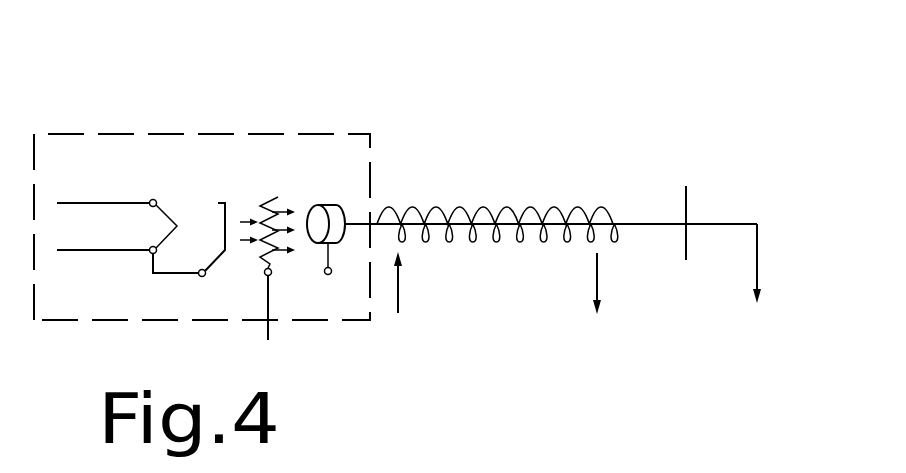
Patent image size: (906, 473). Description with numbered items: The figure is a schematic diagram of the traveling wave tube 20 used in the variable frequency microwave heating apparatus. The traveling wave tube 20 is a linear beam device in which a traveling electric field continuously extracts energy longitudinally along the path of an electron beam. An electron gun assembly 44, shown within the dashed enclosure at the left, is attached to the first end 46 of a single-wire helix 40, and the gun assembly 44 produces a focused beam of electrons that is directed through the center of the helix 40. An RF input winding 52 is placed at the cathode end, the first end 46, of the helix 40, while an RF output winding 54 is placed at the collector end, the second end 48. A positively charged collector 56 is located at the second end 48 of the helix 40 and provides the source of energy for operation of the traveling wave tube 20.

The traveling wave tube 20 is at (126, 66).
The electron gun assembly 44 is at (262, 130).
The single-wire helix 40 is at (472, 205).
The first end 46 is at (393, 200).
The second end 48 is at (580, 205).
The RF input winding 52 is at (398, 293).
The RF output winding 54 is at (597, 300).
The collector 56 is at (686, 197).